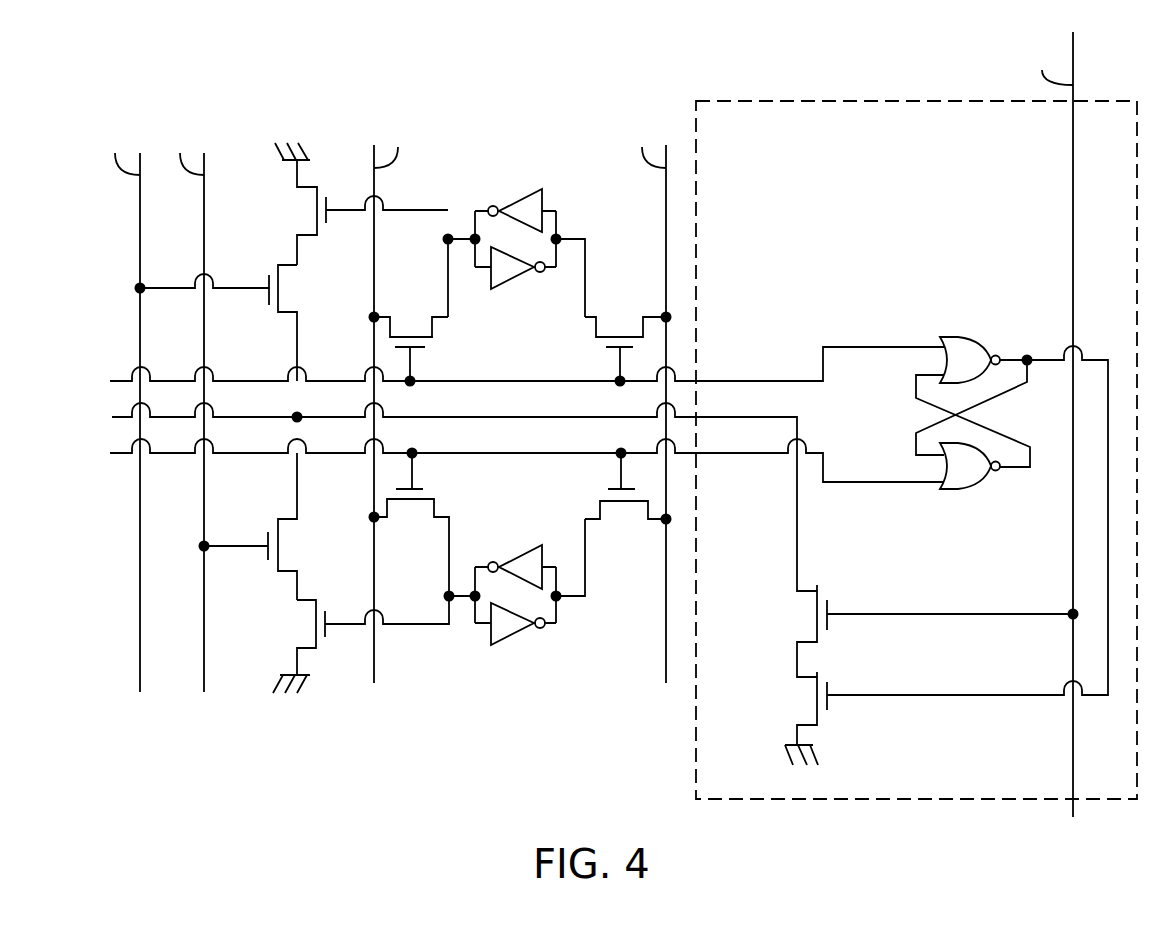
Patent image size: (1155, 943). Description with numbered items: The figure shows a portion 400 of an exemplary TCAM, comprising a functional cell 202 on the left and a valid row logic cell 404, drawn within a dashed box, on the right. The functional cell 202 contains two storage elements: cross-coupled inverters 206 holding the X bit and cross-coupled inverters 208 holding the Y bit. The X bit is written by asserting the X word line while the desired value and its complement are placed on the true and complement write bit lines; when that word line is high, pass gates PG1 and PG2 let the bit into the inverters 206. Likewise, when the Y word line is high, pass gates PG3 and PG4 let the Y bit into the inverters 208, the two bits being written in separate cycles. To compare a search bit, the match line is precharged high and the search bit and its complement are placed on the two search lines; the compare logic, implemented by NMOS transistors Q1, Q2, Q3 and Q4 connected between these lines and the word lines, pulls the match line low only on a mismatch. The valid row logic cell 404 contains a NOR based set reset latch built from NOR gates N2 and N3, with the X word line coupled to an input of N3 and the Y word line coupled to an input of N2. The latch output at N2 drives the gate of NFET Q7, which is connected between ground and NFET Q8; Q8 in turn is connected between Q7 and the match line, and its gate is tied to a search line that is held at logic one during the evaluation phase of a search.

The functional cell 202 is at (421, 44).
The portion of TCAM 400 is at (462, 784).
The valid row logic cell 404 is at (950, 789).
The cross-coupled inverters 206 is at (578, 622).
The cross-coupled inverters 208 is at (572, 203).
The NMOS transistor Q1 is at (275, 627).
The NMOS transistor Q2 is at (250, 563).
The NMOS transistor Q3 is at (258, 308).
The NMOS transistor Q4 is at (270, 208).
The NFET Q7 is at (771, 697).
The NFET Q8 is at (771, 625).
The pass gate PG1 is at (456, 506).
The pass gate PG2 is at (585, 506).
The pass gate PG3 is at (450, 328).
The pass gate PG4 is at (580, 328).
The NOR gate N2 is at (926, 326).
The NOR gate N3 is at (920, 492).